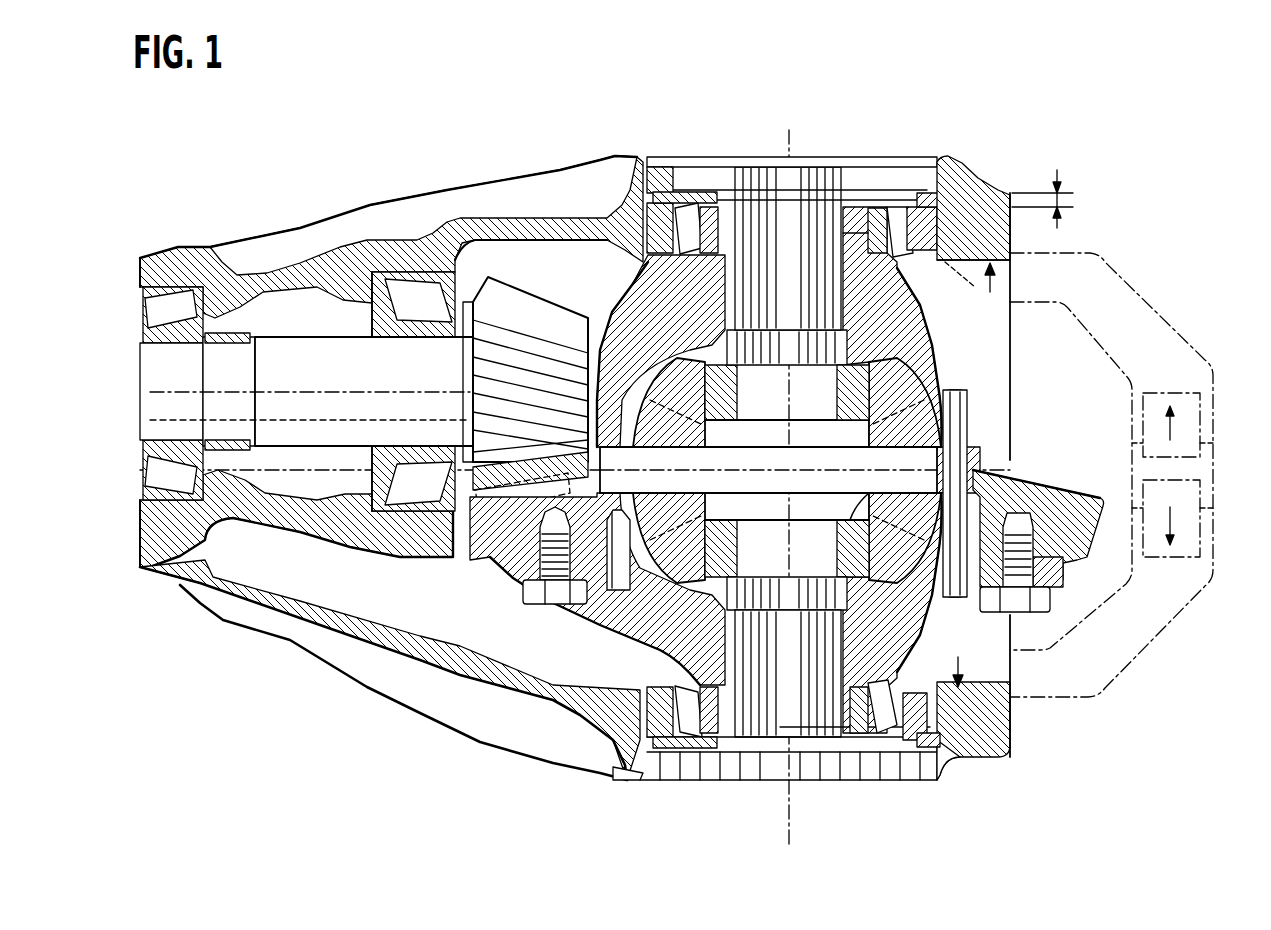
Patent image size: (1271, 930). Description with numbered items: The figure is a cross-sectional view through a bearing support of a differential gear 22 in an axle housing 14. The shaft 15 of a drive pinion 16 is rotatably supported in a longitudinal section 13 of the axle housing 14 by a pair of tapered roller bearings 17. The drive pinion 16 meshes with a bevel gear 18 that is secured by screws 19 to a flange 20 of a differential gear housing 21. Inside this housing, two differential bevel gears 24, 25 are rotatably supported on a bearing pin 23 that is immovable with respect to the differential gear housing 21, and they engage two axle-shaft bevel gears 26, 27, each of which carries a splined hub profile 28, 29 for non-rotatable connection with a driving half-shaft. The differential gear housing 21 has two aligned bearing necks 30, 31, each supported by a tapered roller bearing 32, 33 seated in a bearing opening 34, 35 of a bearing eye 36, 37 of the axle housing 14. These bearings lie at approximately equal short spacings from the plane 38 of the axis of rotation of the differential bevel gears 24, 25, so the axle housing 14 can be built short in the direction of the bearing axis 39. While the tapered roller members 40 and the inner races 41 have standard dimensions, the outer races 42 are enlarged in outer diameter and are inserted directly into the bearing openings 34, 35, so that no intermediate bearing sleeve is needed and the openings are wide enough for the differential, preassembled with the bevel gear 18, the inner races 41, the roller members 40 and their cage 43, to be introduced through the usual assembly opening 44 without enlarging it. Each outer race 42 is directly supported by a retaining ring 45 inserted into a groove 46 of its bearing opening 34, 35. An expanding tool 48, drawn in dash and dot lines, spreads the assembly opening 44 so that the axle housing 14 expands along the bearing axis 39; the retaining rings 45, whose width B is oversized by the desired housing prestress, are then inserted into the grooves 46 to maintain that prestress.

The longitudinal section 13 is at (298, 240).
The axle housing 14 is at (427, 732).
The shaft 15 is at (297, 365).
The drive pinion 16 is at (487, 366).
The tapered roller bearings 17 is at (193, 487).
The bevel gear 18 is at (1076, 547).
The screws 19 is at (547, 597).
The flange 20 is at (517, 567).
The differential gear housing 21 is at (632, 334).
The differential gear 22 is at (546, 658).
The bearing pin 23 is at (770, 462).
The differential bevel gear 24 is at (667, 428).
The differential bevel gear 25 is at (887, 438).
The axle-shaft bevel gear 26 is at (843, 517).
The axle-shaft bevel gear 27 is at (723, 380).
The splined hub profile 28 is at (740, 537).
The splined hub profile 29 is at (837, 383).
The bearing neck 30 is at (713, 723).
The bearing neck 31 is at (853, 217).
The tapered roller bearing 32 is at (890, 757).
The tapered roller bearing 33 is at (692, 190).
The bearing opening 34 is at (650, 760).
The bearing opening 35 is at (940, 190).
The bearing eye 36 is at (613, 767).
The bearing eye 37 is at (940, 173).
The plane 38 is at (993, 470).
The bearing axis 39 is at (785, 145).
The tapered roller members 40 is at (853, 230).
The inner races 41 is at (873, 253).
The outer races 42 is at (660, 235).
The cage 43 is at (893, 210).
The assembly opening 44 is at (1003, 255).
The retaining ring 45 is at (942, 198).
The groove 46 is at (943, 267).
The expanding tool 48 is at (1213, 392).
The width B is at (1062, 200).